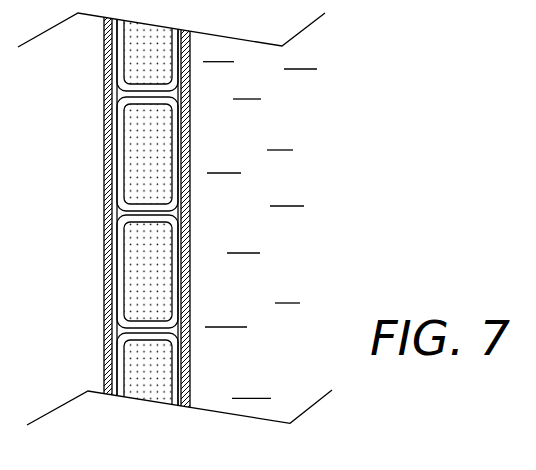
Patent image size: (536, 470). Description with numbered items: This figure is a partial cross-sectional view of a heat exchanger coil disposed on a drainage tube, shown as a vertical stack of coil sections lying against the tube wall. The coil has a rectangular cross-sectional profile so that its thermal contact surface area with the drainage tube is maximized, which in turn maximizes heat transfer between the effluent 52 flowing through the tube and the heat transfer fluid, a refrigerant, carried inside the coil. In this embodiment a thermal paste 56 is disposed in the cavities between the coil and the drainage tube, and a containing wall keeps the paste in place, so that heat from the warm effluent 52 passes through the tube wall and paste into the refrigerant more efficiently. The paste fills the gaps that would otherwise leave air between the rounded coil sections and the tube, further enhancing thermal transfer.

The effluent 52 is at (296, 179).
The thermal paste 56 is at (176, 212).